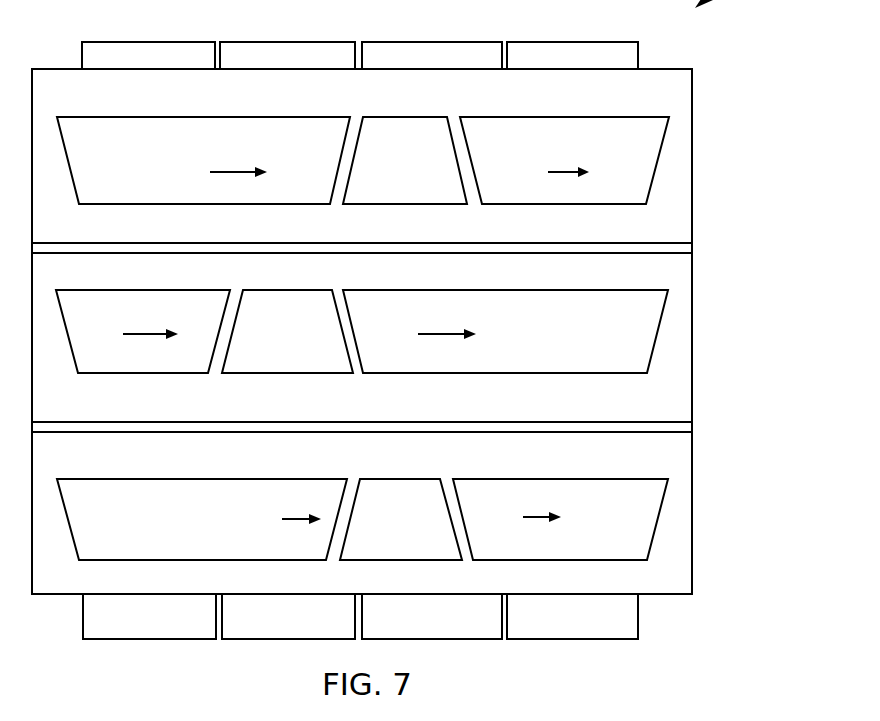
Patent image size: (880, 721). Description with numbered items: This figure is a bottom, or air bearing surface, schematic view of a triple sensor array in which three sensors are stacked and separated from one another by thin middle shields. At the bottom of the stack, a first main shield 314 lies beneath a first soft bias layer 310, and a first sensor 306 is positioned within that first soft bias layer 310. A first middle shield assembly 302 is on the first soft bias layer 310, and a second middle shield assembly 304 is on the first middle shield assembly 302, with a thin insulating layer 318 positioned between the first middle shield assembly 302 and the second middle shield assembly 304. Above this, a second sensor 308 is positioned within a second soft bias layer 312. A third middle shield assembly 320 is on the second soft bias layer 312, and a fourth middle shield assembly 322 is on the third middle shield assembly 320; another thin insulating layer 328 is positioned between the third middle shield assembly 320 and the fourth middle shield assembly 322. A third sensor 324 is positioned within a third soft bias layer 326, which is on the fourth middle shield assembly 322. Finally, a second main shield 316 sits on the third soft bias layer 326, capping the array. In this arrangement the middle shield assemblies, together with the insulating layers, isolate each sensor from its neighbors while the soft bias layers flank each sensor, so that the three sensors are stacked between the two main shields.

The first middle shield assembly 302 is at (487, 466).
The second middle shield assembly 304 is at (490, 410).
The first sensor 306 is at (422, 554).
The second sensor 308 is at (308, 366).
The first soft bias layer 310 is at (217, 534).
The second soft bias layer 312 is at (575, 342).
The first main shield 314 is at (478, 590).
The second main shield 316 is at (485, 104).
The thin insulating layer 318 is at (692, 424).
The third middle shield assembly 320 is at (465, 281).
The fourth middle shield assembly 322 is at (478, 240).
The third sensor 324 is at (428, 197).
The third soft bias layer 326 is at (190, 177).
The thin insulating layer 328 is at (692, 247).